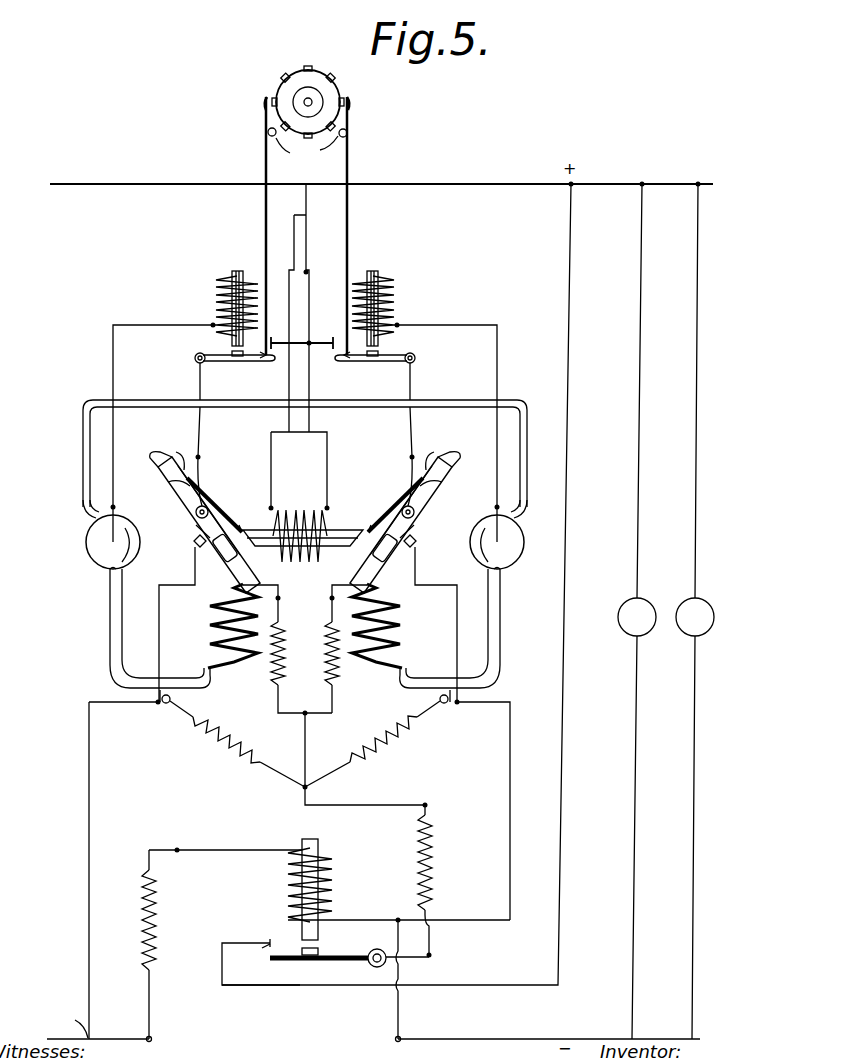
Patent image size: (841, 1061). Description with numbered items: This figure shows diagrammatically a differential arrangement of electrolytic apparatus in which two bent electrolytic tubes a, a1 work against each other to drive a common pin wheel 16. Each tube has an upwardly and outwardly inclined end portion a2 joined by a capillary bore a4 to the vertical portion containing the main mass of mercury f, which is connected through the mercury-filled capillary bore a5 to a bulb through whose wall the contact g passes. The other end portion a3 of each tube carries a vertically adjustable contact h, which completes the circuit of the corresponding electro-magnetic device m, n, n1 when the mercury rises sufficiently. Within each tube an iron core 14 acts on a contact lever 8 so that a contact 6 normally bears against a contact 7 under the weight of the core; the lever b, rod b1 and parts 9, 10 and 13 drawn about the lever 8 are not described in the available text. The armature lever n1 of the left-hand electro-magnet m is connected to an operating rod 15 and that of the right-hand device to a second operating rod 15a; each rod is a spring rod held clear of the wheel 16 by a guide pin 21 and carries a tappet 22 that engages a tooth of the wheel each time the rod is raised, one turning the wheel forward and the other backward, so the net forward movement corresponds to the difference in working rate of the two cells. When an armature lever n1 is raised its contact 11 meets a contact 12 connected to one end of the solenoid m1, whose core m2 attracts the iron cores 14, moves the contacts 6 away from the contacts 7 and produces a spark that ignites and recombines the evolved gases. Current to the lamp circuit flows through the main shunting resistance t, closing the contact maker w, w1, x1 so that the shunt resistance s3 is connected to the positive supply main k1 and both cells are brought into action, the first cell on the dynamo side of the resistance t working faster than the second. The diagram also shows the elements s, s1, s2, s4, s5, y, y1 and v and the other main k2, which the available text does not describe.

The pin wheel 16 is at (328, 97).
The tappet 22 is at (262, 125).
The guide pin 21 is at (307, 151).
The operating rod 15 is at (262, 215).
The operating rod 15a is at (350, 222).
The positive supply main k1 is at (381, 168).
The contacts 12 is at (330, 343).
The electro-magnet m is at (214, 284).
The electrolytic tube a is at (135, 682).
The electro-magnetic device component n is at (215, 352).
The armature lever n1 is at (374, 360).
The contacts 11 is at (330, 360).
The vertically adjustable contact h is at (102, 548).
The end portion of tube a3 is at (100, 557).
The armature lever b is at (205, 550).
The contact 6 is at (168, 475).
The contact 7 is at (306, 448).
The contact lever 8 is at (404, 505).
The end portion of tube a2 is at (190, 500).
The rod b1 is at (233, 520).
The weight 13 is at (212, 528).
The contact 9 is at (196, 535).
The contact block 10 is at (194, 546).
The solenoid m1 is at (296, 520).
The solenoid core m2 is at (328, 548).
The iron core 14 is at (188, 586).
The capillary bore a4 is at (212, 618).
The capillary bore a5 is at (128, 640).
The electrolytic tube a1 is at (120, 650).
The main mass of mercury f is at (135, 688).
The contact g is at (168, 702).
The resistance coil y is at (286, 652).
The resistance coil y1 is at (338, 668).
The resistance s5 is at (237, 744).
The resistance s is at (372, 744).
The junction conductor s2 is at (304, 788).
The shunt resistance s3 is at (433, 838).
The relay coil v is at (320, 838).
The main shunting resistance t is at (160, 882).
The conductor s1 is at (398, 918).
The contact maker w is at (304, 961).
The contact maker w1 is at (261, 970).
The contact maker contact x1 is at (270, 940).
The negative bus conductor k2 is at (373, 870).
The conductor s4 is at (74, 1018).